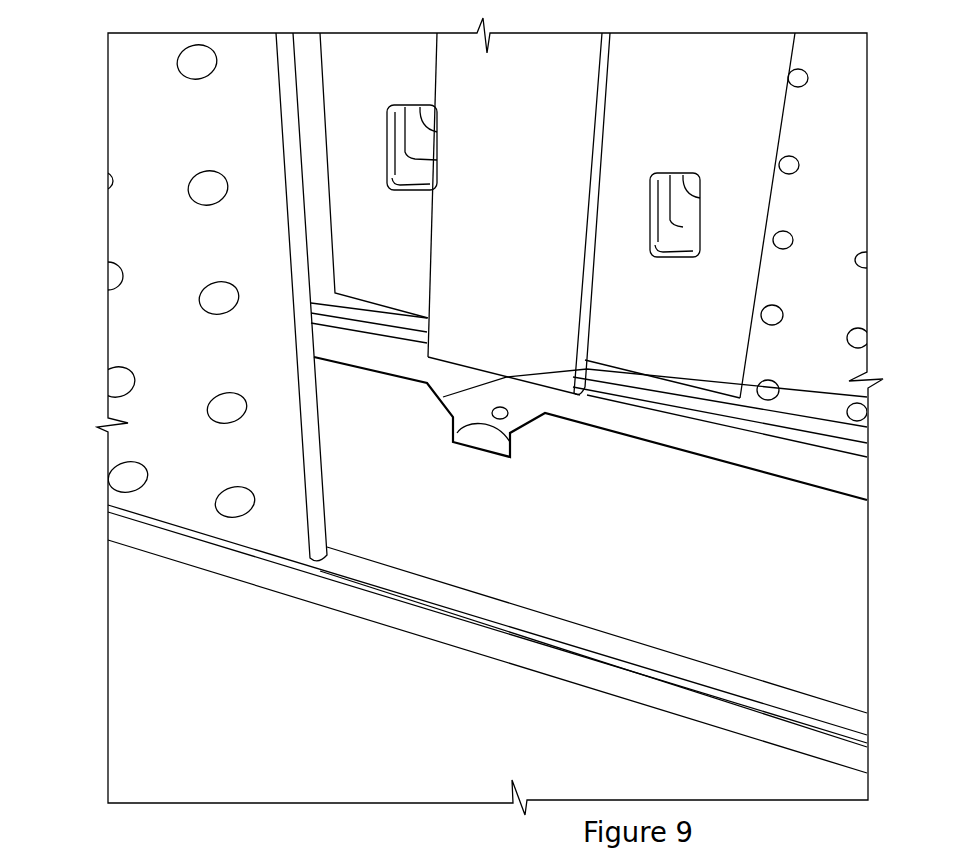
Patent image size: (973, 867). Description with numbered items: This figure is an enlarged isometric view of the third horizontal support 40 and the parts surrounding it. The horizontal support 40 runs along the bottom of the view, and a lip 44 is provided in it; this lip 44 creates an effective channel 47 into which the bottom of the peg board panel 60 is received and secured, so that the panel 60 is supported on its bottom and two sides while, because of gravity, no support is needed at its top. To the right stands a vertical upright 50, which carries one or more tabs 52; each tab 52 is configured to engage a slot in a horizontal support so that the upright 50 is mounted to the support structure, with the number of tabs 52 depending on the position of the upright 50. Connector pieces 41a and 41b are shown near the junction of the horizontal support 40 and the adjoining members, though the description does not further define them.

The third horizontal support 40 is at (868, 602).
The beam connector flange 41a is at (868, 398).
The connector bracket 41b is at (511, 438).
The lip 44 is at (433, 616).
The channel 47 is at (880, 716).
The vertical upright 50 is at (771, 177).
The tab 52 is at (687, 227).
The peg board panel 60 is at (115, 443).